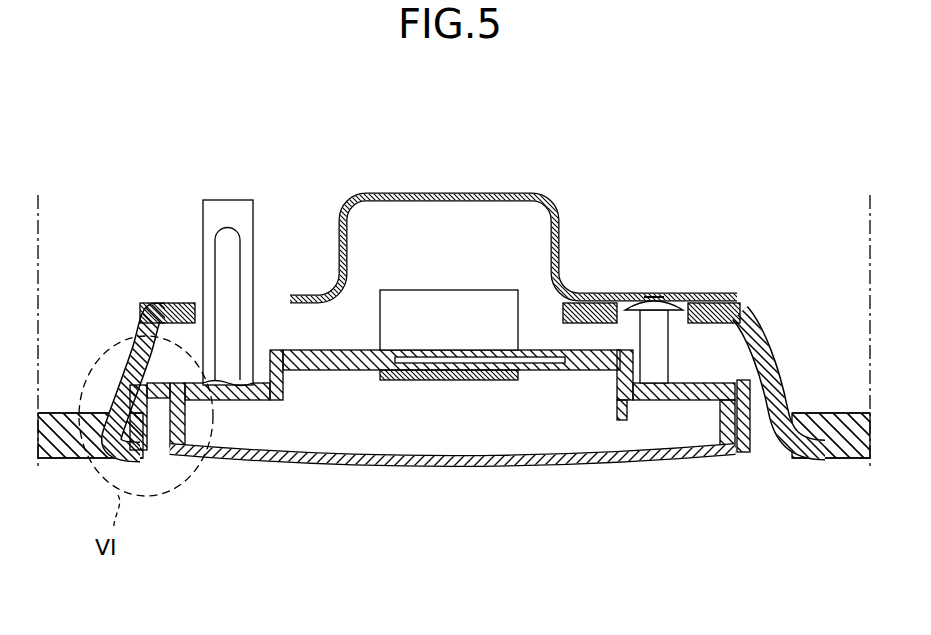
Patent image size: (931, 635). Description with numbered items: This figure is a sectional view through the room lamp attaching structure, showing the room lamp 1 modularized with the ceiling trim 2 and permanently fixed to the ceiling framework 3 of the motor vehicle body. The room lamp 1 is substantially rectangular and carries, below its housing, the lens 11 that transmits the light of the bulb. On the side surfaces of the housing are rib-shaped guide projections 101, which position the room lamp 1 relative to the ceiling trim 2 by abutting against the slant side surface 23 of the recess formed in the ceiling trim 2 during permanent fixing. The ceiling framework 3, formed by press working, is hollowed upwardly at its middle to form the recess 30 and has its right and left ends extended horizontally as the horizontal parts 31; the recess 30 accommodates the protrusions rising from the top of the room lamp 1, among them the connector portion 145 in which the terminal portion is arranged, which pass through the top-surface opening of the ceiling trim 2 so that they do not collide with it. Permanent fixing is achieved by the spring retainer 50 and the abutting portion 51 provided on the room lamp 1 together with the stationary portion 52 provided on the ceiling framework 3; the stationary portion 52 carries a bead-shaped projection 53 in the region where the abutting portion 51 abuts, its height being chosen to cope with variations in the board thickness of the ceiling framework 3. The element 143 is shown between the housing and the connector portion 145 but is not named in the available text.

The room lamp 1 is at (371, 468).
The ceiling trim 2 is at (828, 466).
The ceiling framework 3 is at (346, 195).
The lens 11 is at (463, 470).
The slant side surface 23 is at (165, 303).
The recess 30 is at (508, 213).
The horizontal part 31 is at (299, 295).
The spring retainer 50 is at (230, 200).
The abutting portion 51 is at (657, 372).
The stationary portion 52 is at (655, 297).
The bead-shaped projection 53 is at (673, 300).
The guide projection 101 is at (164, 350).
The circuit board 143 is at (471, 370).
The connector portion 145 is at (447, 302).